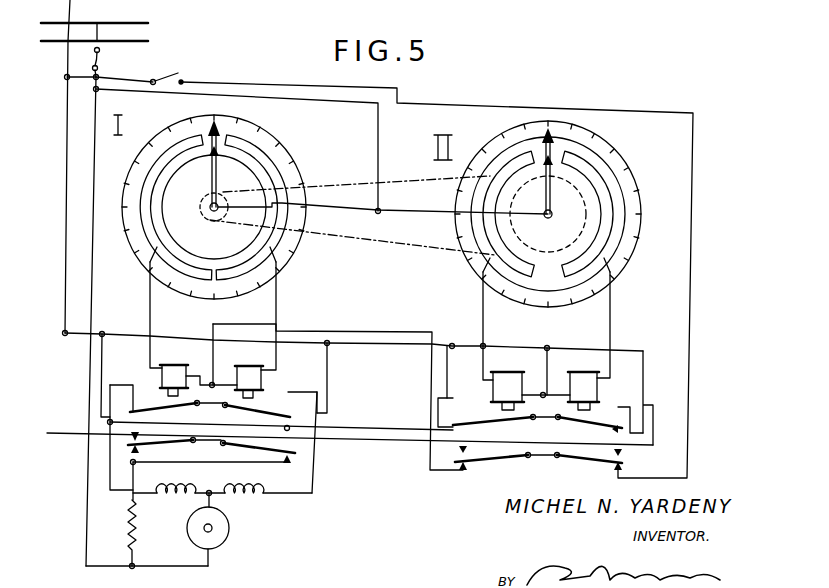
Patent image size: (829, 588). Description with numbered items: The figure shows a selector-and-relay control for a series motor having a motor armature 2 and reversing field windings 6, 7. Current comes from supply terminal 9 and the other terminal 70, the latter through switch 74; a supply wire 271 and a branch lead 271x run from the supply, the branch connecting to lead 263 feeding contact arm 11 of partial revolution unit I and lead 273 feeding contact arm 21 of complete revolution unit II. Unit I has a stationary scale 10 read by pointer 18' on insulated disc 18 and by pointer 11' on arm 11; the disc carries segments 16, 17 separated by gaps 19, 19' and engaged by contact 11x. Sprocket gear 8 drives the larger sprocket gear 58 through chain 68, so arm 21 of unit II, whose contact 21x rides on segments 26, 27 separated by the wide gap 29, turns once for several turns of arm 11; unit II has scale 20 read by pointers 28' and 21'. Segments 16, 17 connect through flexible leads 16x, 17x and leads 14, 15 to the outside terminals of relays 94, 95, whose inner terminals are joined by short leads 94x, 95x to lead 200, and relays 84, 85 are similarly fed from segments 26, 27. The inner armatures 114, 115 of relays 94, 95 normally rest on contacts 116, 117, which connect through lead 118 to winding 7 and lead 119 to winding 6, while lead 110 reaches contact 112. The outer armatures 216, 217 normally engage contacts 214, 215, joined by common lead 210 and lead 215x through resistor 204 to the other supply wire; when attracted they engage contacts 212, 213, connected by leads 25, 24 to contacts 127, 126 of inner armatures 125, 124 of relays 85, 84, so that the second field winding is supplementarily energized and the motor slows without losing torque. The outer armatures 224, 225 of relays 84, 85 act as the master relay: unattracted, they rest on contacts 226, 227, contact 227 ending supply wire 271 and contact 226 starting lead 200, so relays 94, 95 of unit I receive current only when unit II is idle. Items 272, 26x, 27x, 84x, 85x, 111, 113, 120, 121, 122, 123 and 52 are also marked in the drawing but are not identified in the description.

The supply terminal 9 is at (94, 20).
The supply terminal 70 is at (99, 24).
The switch 74 is at (101, 61).
The switch 272 is at (158, 80).
The supply wire 271 is at (415, 103).
The lead 271x is at (212, 93).
The stationary circular scale 10 is at (283, 152).
The insulated disc 18 is at (246, 207).
The sprocket gear 8 is at (209, 208).
The segment 16 is at (187, 257).
The segment 17 is at (243, 257).
The gap 19 is at (185, 117).
The gap 19' is at (211, 253).
The contact arm 11 is at (226, 163).
The contact 11x is at (211, 160).
The pointer 11' is at (260, 125).
The pointer 18' is at (245, 116).
The flexible lead 16x is at (150, 258).
The flexible lead 17x is at (280, 258).
The lead 14 is at (150, 296).
The lead 15 is at (277, 296).
The lead 263 is at (333, 210).
The lead 273 is at (406, 211).
The chain 68 is at (390, 182).
The stationary circular scale 20 is at (612, 151).
The sprocket gear 58 is at (561, 183).
The contact arm 21 is at (561, 181).
The contact 21x is at (546, 178).
The pointer 21' is at (587, 123).
The pointer 28' is at (572, 110).
The gap 29 is at (542, 150).
The segment 26 is at (505, 241).
The segment 27 is at (580, 262).
The segment terminal 26x is at (490, 266).
The segment terminal 27x is at (615, 269).
The lead 24 is at (483, 312).
The lead 25 is at (611, 312).
The lead 110 is at (100, 349).
The lead 200 is at (340, 332).
The conductor 111 is at (327, 386).
The relay 94 is at (172, 367).
The relay 95 is at (247, 367).
The short lead 94x is at (200, 374).
The short lead 95x is at (225, 374).
The relay contact 116 is at (135, 398).
The relay contact 117 is at (287, 398).
The inner armature 114 is at (128, 410).
The contact 112 is at (140, 414).
The relay contact 113 is at (285, 418).
The inner armature 115 is at (322, 407).
The relay contact 212 is at (108, 424).
The relay contact 213 is at (343, 448).
The lead 118 is at (336, 444).
The relay contact 214 is at (128, 447).
The outer armature 216 is at (177, 451).
The outer armature 217 is at (259, 453).
The relay contact 215 is at (244, 467).
The lead 215x is at (287, 464).
The common lead 210 is at (128, 474).
The field winding 7 is at (172, 491).
The field winding 6 is at (264, 491).
The lead 119 is at (318, 493).
The resistor 204 is at (129, 531).
The motor armature 2 is at (230, 530).
The conductor 120 is at (447, 361).
The relay contact 126 is at (465, 408).
The relay 84 is at (508, 380).
The relay 85 is at (584, 380).
The coil terminal 84x is at (533, 385).
The coil terminal 85x is at (560, 385).
The conductor 121 is at (644, 371).
The relay contact 127 is at (618, 416).
The armature link 122 is at (440, 428).
The inner armature 124 is at (495, 419).
The contact junction 52 is at (545, 418).
The inner armature 125 is at (590, 428).
The contact support 123 is at (645, 433).
The outer armature 224 is at (500, 459).
The outer armature 225 is at (589, 468).
The contact 226 is at (466, 470).
The contact 227 is at (622, 468).